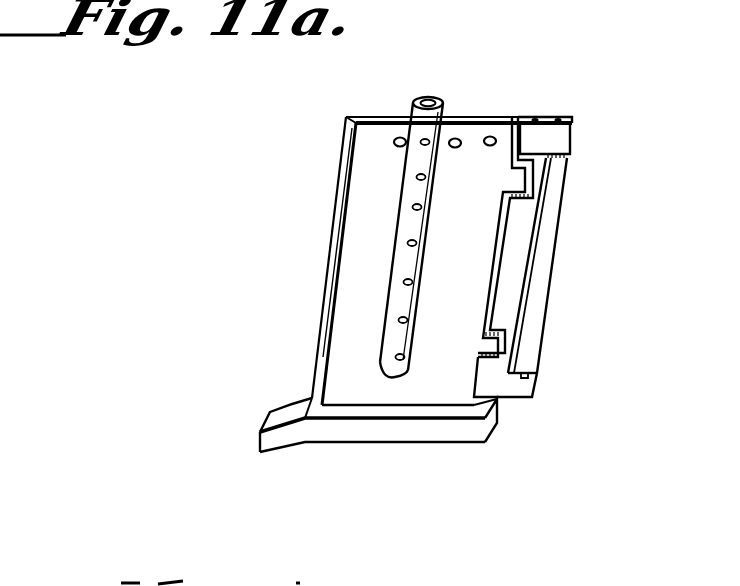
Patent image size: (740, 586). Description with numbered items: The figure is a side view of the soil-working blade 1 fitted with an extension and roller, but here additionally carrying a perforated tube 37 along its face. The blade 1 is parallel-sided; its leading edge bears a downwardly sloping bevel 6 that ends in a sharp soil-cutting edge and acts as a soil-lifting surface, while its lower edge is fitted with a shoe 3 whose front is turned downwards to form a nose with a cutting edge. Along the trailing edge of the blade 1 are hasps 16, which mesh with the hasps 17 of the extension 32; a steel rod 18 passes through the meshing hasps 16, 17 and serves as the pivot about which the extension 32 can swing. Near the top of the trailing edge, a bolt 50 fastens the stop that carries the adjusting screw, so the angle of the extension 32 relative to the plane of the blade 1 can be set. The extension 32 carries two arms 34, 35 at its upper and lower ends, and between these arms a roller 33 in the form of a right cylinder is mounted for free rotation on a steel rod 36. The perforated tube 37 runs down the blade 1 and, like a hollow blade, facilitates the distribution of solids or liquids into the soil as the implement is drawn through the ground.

The blade 1 is at (355, 252).
The shoe 3 is at (388, 430).
The bevel 6 is at (338, 207).
The hasps 16 is at (518, 183).
The hasps 17 is at (516, 153).
The steel rod 18 is at (535, 121).
The extension 32 is at (498, 298).
The roller 33 is at (540, 337).
The arm 34 is at (571, 142).
The arm 35 is at (524, 388).
The steel rod 36 is at (565, 122).
The perforated tube 37 is at (410, 226).
The bolt 50 is at (490, 135).